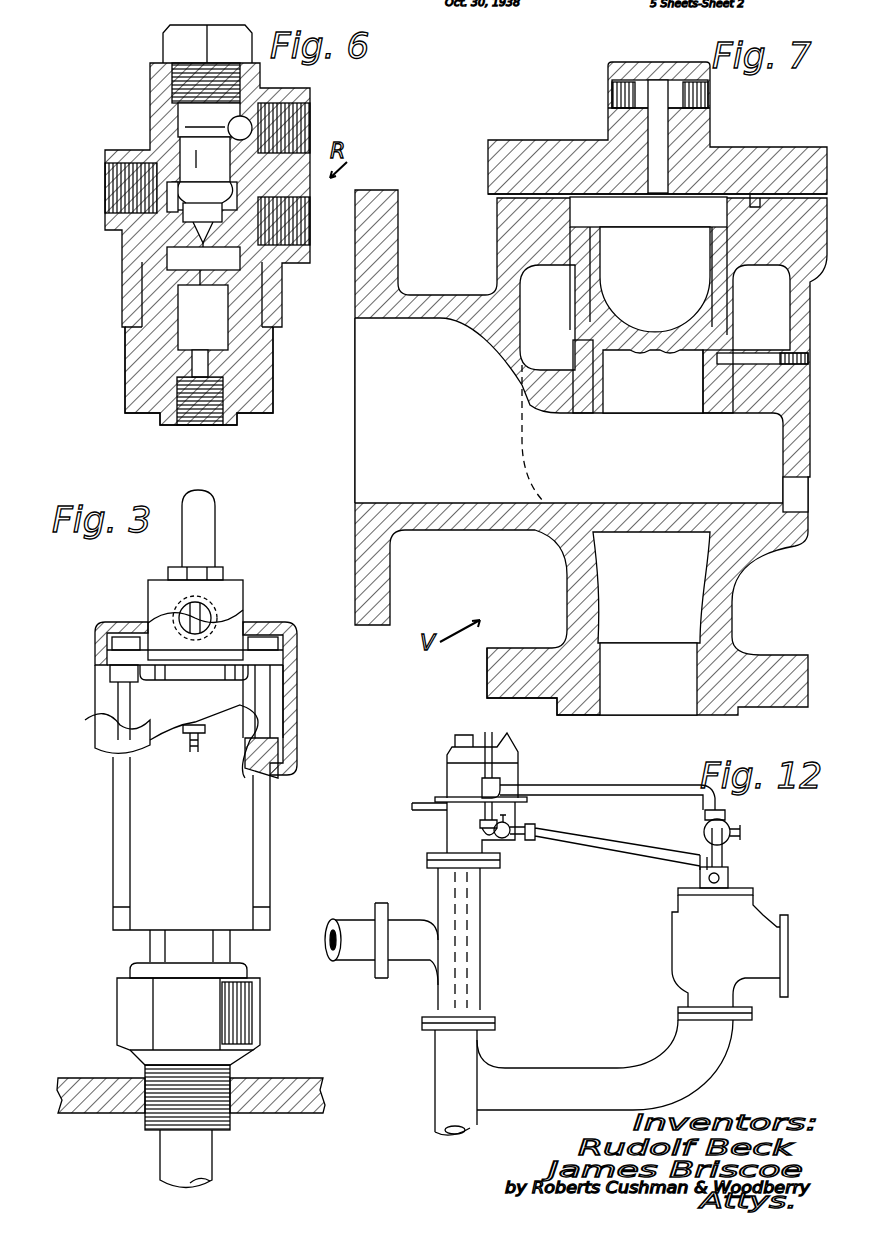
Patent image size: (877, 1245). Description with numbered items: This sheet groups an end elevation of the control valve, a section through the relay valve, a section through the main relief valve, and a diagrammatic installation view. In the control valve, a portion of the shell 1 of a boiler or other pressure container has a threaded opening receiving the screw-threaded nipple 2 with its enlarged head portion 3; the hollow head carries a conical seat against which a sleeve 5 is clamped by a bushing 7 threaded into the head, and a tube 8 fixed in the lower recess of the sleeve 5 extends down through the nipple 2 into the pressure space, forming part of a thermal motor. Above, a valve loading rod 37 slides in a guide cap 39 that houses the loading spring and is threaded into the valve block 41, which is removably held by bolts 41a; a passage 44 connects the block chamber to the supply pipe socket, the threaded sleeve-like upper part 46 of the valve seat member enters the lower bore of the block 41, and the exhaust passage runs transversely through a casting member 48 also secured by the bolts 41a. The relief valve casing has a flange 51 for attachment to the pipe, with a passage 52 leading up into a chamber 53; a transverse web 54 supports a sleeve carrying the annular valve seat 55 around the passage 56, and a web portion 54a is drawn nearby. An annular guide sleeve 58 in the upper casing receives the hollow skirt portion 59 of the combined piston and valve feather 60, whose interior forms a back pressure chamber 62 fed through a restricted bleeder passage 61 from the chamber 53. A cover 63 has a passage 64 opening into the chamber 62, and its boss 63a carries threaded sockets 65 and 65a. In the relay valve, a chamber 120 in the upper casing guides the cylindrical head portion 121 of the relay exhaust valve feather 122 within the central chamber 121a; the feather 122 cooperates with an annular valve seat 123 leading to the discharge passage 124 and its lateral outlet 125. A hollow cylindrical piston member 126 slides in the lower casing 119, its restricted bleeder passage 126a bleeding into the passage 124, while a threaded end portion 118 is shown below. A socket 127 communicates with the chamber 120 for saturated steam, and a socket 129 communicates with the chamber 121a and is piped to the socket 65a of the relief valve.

In FIG. 3, the shell 1 is at (263, 1078).
In FIG. 3, the screw-threaded nipple 2 is at (232, 1120).
In FIG. 3, the enlarged head portion 3 is at (248, 1010).
In FIG. 3, the sleeve 5 is at (190, 946).
In FIG. 3, the bushing 7 is at (247, 972).
In FIG. 3, the tube 8 is at (215, 1168).
In FIG. 3, the valve loading rod 37 is at (213, 614).
In FIG. 3, the guide cap 39 is at (207, 533).
In FIG. 3, the valve block 41 is at (236, 588).
In FIG. 3, the bolts 41a is at (115, 642).
In FIG. 3, the passage 44 is at (175, 612).
In FIG. 3, the sleeve-like upper part of valve seat member 46 is at (193, 680).
In FIG. 3, the member 48 is at (280, 700).
In FIG. 7, the flange 51 is at (555, 636).
In FIG. 7, the passage 52 is at (598, 595).
In FIG. 7, the chamber 53 is at (780, 298).
In FIG. 7, the transverse web 54 is at (740, 428).
In FIG. 7, the valve chamber 54a is at (612, 394).
In FIG. 7, the annular valve seat 55 is at (575, 352).
In FIG. 7, the passage 56 is at (632, 428).
In FIG. 7, the annular guide sleeve 58 is at (588, 258).
In FIG. 7, the hollow skirt portion 59 is at (598, 278).
In FIG. 7, the combined piston and valve feather 60 is at (605, 315).
In FIG. 7, the restricted bleeder passage 61 is at (725, 338).
In FIG. 7, the back pressure chamber 62 is at (665, 211).
In FIG. 7, the cover 63 is at (500, 155).
In FIG. 7, the boss 63a is at (616, 126).
In FIG. 7, the passage 64 is at (662, 126).
In FIG. 7, the screw-threaded socket 65 is at (614, 88).
In FIG. 7, the screw-threaded socket 65a is at (708, 90).
In FIG. 6, the threaded stem 118 is at (190, 420).
In FIG. 6, the casing 119 is at (135, 367).
In FIG. 6, the chamber 120 is at (185, 117).
In FIG. 6, the cylindrical head portion 121 is at (186, 139).
In FIG. 6, the chamber 121a is at (211, 162).
In FIG. 6, the relay or exhaust valve feather 122 is at (202, 212).
In FIG. 6, the annular valve seat 123 is at (150, 262).
In FIG. 6, the discharge passage 124 is at (232, 258).
In FIG. 6, the lateral outlet 125 is at (292, 214).
In FIG. 6, the hollow cylindrical piston member 126 is at (170, 330).
In FIG. 6, the restricted bleeder passage 126a is at (206, 289).
In FIG. 6, the screw-threaded socket 127 is at (300, 118).
In FIG. 6, the threaded socket 129 is at (112, 183).